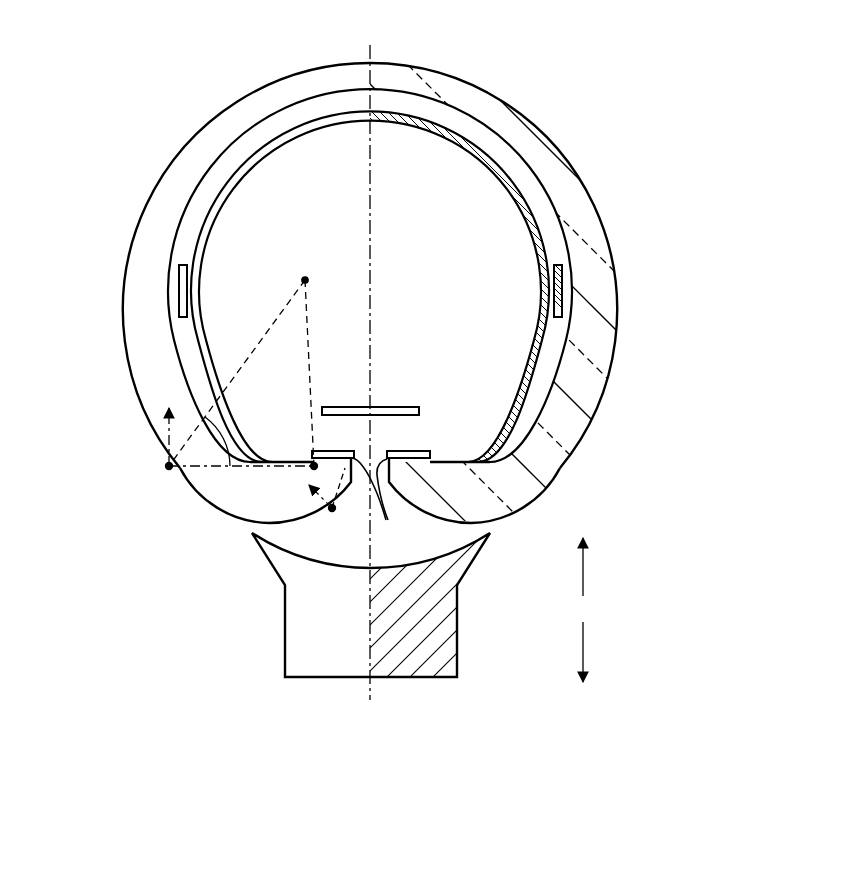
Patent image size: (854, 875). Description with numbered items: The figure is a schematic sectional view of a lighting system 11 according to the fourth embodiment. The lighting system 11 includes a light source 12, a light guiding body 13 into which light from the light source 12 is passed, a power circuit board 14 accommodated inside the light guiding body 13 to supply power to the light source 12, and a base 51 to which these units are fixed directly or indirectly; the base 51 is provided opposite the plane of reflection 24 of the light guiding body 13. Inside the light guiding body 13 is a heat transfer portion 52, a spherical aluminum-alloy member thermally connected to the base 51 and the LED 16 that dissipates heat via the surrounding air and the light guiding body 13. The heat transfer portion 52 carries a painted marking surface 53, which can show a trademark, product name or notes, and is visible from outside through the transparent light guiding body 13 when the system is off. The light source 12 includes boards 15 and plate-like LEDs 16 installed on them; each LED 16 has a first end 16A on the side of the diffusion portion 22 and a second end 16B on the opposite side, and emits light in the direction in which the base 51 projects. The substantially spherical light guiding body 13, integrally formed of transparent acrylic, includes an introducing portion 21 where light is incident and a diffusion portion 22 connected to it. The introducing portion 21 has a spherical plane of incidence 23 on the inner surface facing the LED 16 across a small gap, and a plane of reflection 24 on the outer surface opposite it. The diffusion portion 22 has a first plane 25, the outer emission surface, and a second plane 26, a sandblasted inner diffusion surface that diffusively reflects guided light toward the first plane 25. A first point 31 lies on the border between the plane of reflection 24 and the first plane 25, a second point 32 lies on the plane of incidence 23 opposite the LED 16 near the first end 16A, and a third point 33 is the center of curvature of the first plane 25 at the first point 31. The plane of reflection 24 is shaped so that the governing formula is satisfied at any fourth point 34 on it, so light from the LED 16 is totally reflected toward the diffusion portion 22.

The lighting system 11 is at (622, 135).
The light source 12 is at (458, 431).
The light guiding body 13 is at (472, 72).
The power circuit board 14 is at (392, 406).
The board 15 is at (371, 432).
The LED 16 is at (346, 452).
The first end 16A is at (313, 452).
The second end 16B is at (384, 503).
The introducing portion 21 is at (274, 520).
The diffusion portion 22 is at (310, 86).
The plane of incidence 23 is at (300, 460).
The plane of reflection 24 is at (306, 520).
The first plane 25 is at (615, 252).
The second plane 26 is at (567, 340).
The first point 31 is at (165, 469).
The second point 32 is at (312, 469).
The third point 33 is at (305, 277).
The fourth point 34 is at (334, 510).
The base 51 is at (318, 682).
The heat transfer portion 52 is at (497, 178).
The marking surface 53 is at (178, 297).